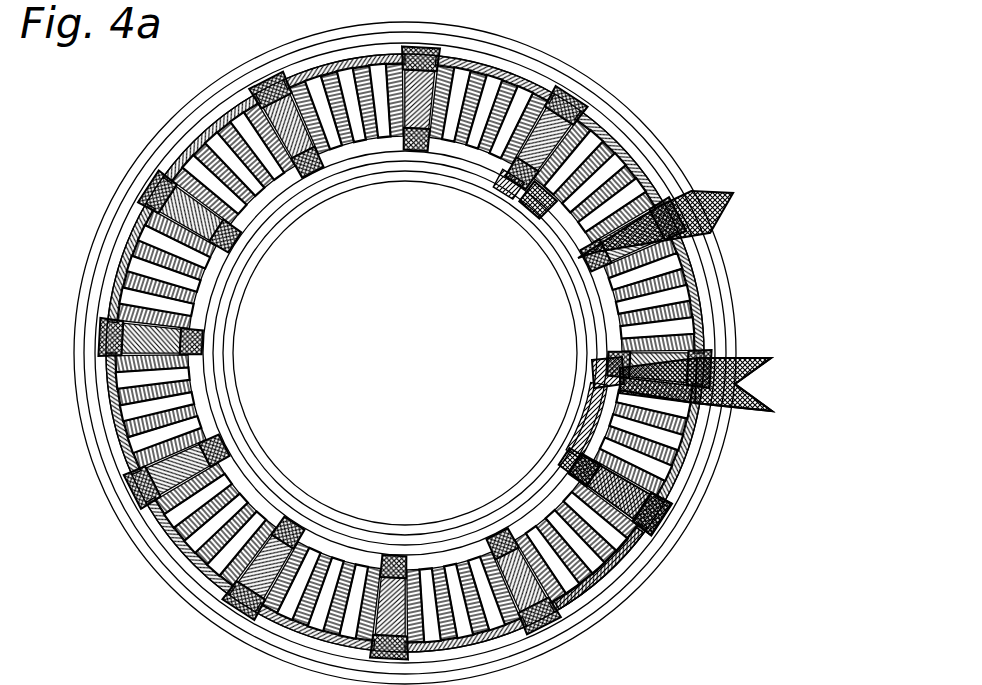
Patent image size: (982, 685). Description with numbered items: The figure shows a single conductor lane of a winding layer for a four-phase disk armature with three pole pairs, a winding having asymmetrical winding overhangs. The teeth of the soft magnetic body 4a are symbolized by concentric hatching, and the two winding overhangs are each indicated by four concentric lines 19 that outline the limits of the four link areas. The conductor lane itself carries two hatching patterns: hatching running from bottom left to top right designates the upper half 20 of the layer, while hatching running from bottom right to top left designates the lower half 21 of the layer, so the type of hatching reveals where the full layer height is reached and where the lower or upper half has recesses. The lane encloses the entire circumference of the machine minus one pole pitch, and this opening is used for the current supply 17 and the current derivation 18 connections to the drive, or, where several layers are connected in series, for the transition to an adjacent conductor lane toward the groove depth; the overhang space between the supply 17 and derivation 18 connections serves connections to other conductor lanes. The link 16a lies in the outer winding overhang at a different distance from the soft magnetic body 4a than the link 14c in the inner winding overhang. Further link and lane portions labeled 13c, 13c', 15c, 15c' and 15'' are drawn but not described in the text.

The soft magnetic body 4a is at (613, 205).
The current derivation connection 18 is at (734, 214).
The current supply connection 17 is at (757, 362).
The connecting key 13c is at (739, 384).
The concentric lines 19 is at (712, 465).
The outer joint element 15'' is at (730, 528).
The connecting key 13c' is at (667, 536).
The link in the outer winding overhang 16a is at (610, 597).
The inner joint element 15c is at (543, 365).
The link in the inner winding overhang 14c is at (588, 425).
The inner joint element 15c' is at (531, 451).
The upper half of the layer 20 is at (510, 180).
The lower half of the layer 21 is at (532, 215).